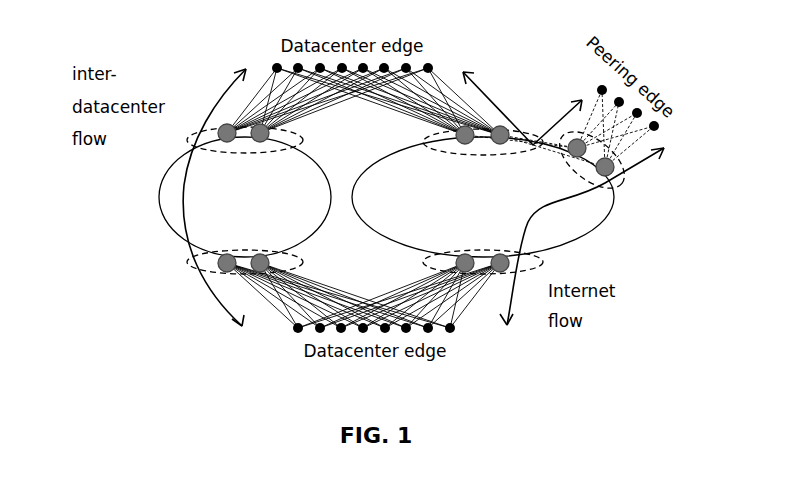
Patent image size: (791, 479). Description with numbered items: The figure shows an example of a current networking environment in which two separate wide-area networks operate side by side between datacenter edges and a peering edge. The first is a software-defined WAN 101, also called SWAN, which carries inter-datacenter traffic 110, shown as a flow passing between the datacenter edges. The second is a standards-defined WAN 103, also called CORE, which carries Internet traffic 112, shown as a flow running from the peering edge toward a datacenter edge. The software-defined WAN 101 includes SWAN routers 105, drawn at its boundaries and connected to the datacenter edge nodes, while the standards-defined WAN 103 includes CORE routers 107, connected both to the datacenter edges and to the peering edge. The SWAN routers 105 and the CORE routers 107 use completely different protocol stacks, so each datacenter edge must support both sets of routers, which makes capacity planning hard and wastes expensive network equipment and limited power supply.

The software-defined WAN 101 is at (229, 185).
The standards-defined WAN 103 is at (471, 185).
The SWAN routers 105 is at (297, 134).
The CORE routers 107 is at (438, 150).
The inter-datacenter traffic 110 is at (173, 204).
The Internet traffic 112 is at (600, 195).